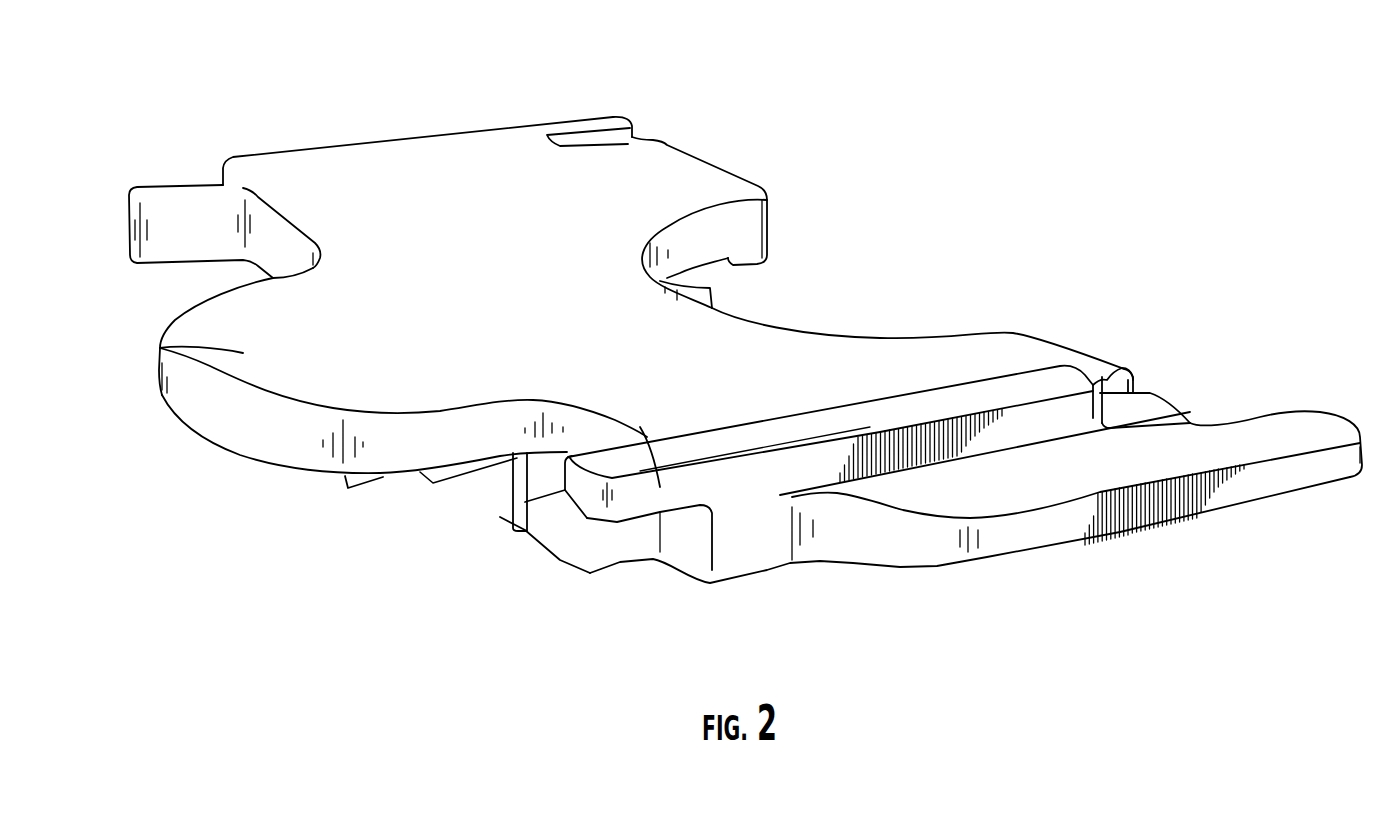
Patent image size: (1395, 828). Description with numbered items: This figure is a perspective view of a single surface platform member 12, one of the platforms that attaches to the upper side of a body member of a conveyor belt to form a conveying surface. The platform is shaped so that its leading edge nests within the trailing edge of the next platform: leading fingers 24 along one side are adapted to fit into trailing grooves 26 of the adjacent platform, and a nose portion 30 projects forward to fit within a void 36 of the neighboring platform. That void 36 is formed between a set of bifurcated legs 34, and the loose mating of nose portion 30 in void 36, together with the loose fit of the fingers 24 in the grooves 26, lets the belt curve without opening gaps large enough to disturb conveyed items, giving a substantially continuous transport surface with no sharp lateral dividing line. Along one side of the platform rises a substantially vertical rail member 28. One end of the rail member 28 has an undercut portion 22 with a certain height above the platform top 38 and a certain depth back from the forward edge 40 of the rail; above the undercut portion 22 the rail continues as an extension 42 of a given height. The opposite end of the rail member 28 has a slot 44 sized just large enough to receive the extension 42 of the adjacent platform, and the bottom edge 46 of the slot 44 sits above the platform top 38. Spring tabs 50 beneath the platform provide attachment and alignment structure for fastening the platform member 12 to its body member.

The surface platform member 12 is at (733, 106).
The undercut portion 22 is at (686, 522).
The leading fingers 24 is at (128, 210).
The trailing grooves 26 is at (602, 137).
The rail member 28 is at (837, 425).
The nose portion 30 is at (160, 348).
The bifurcated legs 34 is at (688, 185).
The void 36 is at (742, 232).
The platform top 38 is at (746, 398).
The forward edge 40 is at (587, 480).
The extension 42 is at (640, 427).
The slot 44 is at (1127, 370).
The bottom edge 46 is at (1133, 413).
The spring tabs 50 is at (537, 468).